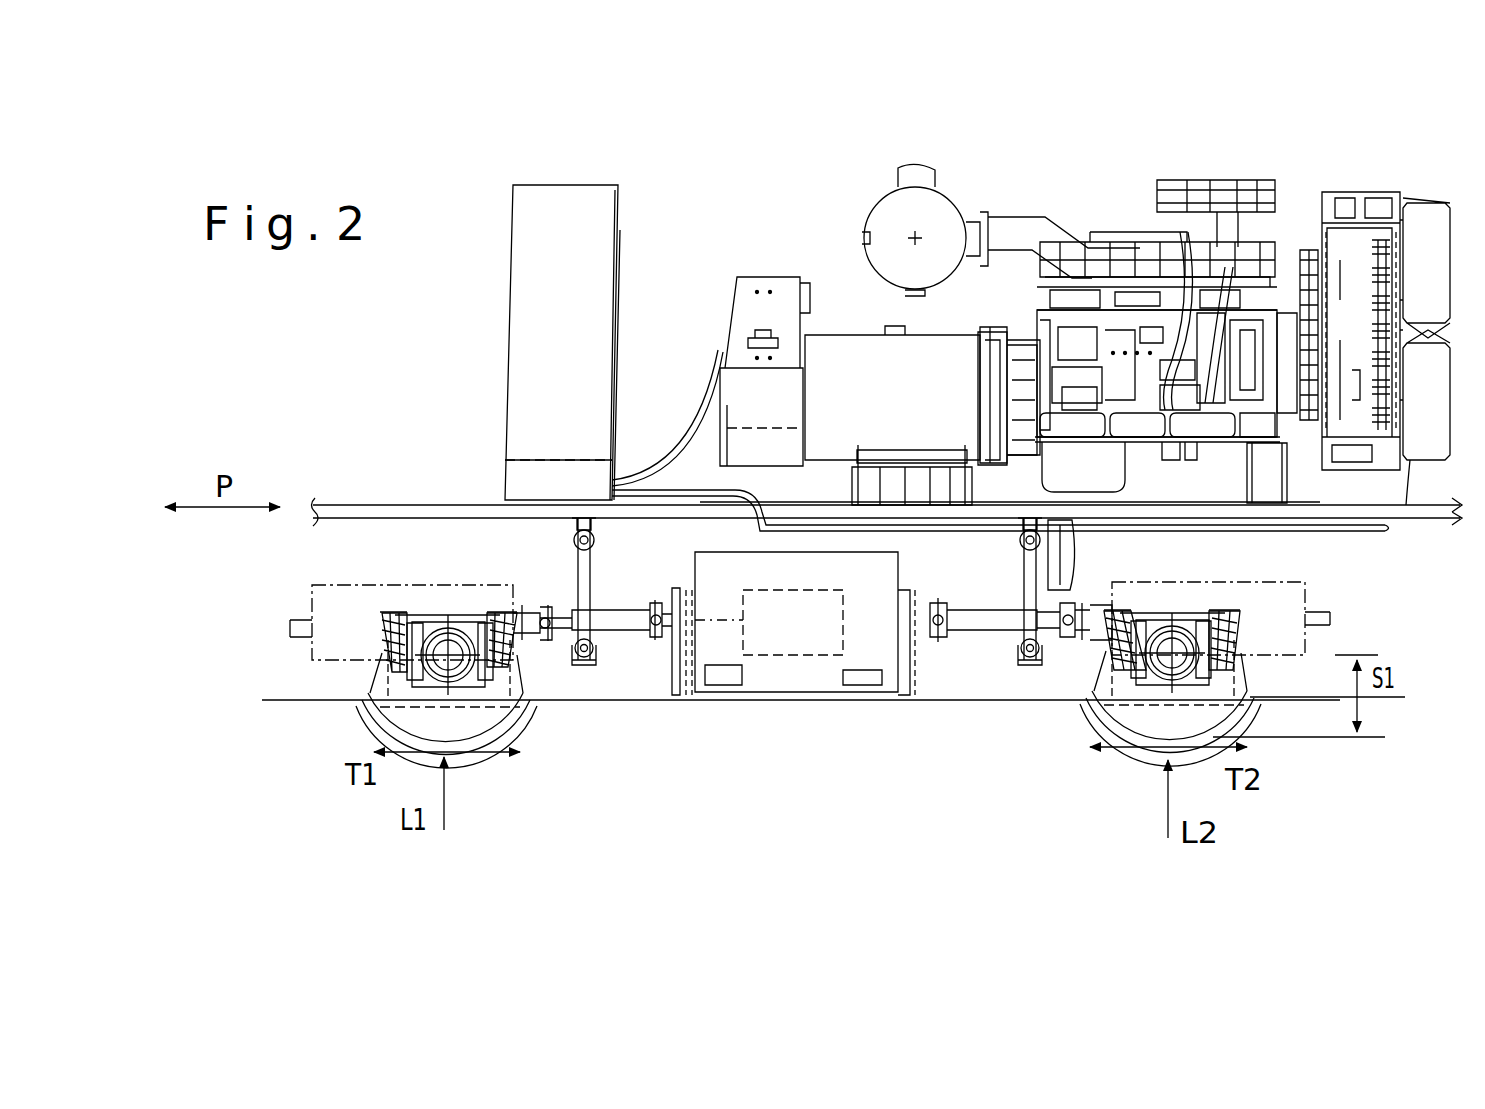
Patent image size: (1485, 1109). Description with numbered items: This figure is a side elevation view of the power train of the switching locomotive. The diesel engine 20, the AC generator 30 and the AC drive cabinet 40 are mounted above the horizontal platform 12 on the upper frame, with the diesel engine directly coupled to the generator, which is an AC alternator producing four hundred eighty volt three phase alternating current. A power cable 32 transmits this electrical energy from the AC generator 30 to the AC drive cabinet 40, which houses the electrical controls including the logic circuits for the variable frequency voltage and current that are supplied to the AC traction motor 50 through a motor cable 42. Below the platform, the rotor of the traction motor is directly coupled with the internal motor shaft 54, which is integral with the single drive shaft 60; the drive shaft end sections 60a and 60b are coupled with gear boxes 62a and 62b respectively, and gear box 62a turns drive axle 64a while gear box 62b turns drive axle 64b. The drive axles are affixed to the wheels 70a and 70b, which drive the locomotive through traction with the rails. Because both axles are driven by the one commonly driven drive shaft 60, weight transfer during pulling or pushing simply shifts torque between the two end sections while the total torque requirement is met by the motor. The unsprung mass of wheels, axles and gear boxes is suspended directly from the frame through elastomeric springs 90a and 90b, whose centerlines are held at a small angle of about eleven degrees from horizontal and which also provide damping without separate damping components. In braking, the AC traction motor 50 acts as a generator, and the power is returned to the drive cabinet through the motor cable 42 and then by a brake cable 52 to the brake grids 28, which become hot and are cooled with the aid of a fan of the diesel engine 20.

The horizontal platform 12 is at (425, 505).
The diesel engine 20 is at (1073, 277).
The brake grids 28 is at (1413, 198).
The AC generator 30 is at (783, 283).
The power cable 32 is at (677, 425).
The AC drive cabinet 40 is at (545, 276).
The motor cable 42 is at (652, 485).
The AC traction motor 50 is at (780, 675).
The brake cable 52 is at (1320, 538).
The internal motor shaft 54 is at (855, 628).
The drive shaft 60 is at (815, 769).
The drive shaft end section 60a is at (614, 626).
The drive shaft end section 60b is at (988, 628).
The gear box 62a is at (315, 668).
The gear box 62b is at (1103, 675).
The drive axle 64a is at (430, 667).
The drive axle 64b is at (1185, 655).
The wheel 70a is at (378, 716).
The wheel 70b is at (1235, 718).
The elastomeric spring 90a is at (500, 613).
The elastomeric spring 90b is at (1228, 612).